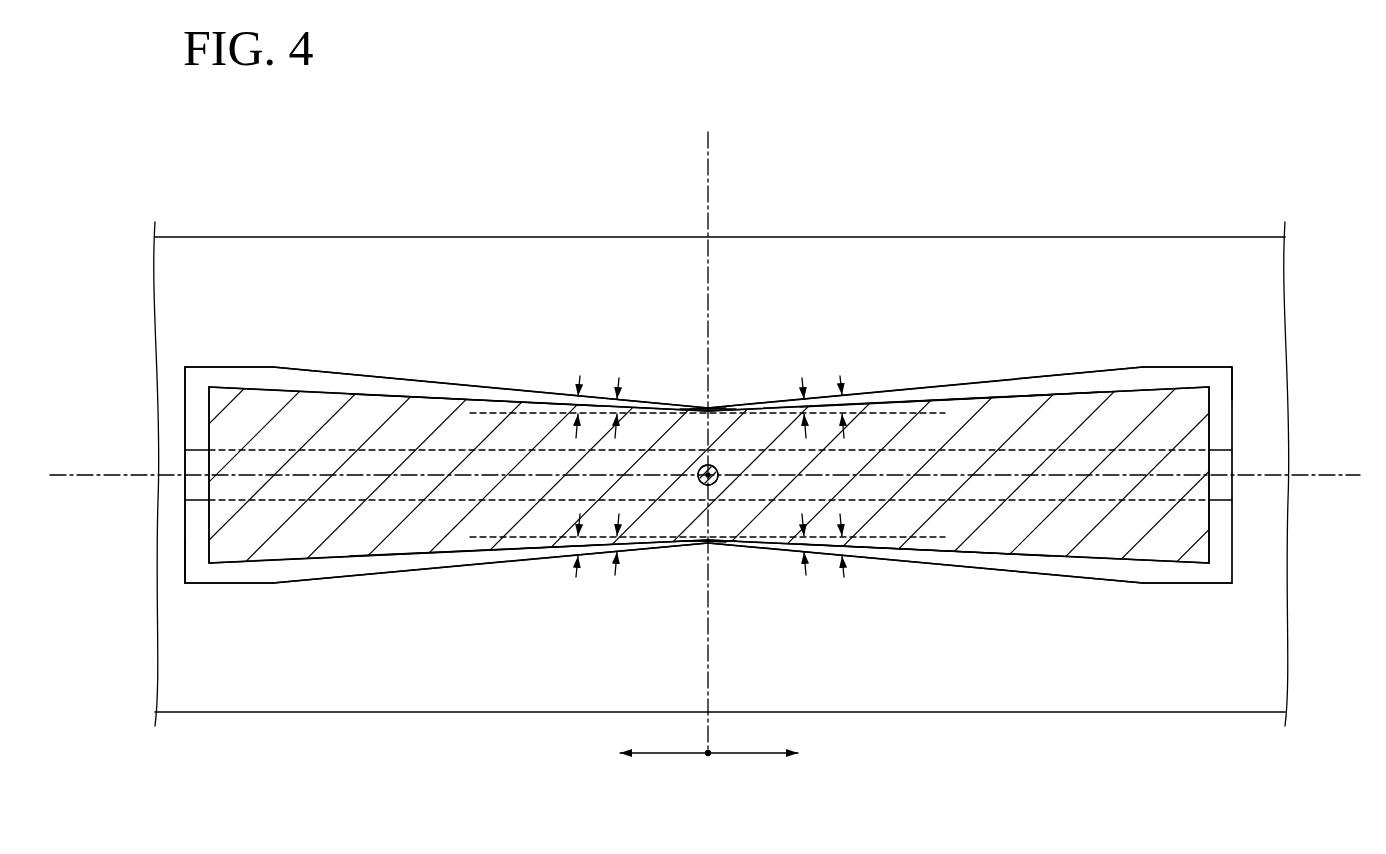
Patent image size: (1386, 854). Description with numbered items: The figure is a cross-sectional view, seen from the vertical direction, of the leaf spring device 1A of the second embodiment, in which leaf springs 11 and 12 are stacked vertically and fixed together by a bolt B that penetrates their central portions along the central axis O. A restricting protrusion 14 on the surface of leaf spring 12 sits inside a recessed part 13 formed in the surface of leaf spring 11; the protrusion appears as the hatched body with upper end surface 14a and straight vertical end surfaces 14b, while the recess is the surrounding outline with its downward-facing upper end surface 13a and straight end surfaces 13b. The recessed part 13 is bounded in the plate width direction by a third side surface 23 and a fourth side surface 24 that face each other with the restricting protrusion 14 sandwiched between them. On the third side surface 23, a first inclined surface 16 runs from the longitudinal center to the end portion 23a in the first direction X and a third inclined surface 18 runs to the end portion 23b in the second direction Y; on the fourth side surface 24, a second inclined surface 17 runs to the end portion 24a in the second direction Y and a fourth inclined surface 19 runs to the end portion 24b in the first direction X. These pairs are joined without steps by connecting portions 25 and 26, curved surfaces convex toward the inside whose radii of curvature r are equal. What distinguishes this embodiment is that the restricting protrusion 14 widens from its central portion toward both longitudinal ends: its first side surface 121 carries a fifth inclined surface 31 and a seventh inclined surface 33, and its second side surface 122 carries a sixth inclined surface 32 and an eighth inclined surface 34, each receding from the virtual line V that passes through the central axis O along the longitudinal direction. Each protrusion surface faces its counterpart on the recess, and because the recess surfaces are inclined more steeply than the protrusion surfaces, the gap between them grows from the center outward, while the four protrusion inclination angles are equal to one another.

The leaf spring device 1A is at (1276, 146).
The leaf spring 11 is at (1158, 237).
The leaf spring 12 is at (1195, 384).
The recessed part 13 is at (1220, 574).
The upper end surface 13a is at (197, 455).
The end surfaces 13b is at (185, 541).
The restricting protrusion 14 is at (709, 388).
The upper end surface 14a is at (960, 466).
The end surfaces 14b is at (209, 468).
The first inclined surface 16 is at (888, 400).
The second inclined surface 17 is at (431, 563).
The third inclined surface 18 is at (500, 402).
The fourth inclined surface 19 is at (1018, 566).
The third side surface 23 is at (392, 383).
The end portion 23a is at (1151, 367).
The end portion 23b is at (210, 367).
The fourth side surface 24 is at (355, 569).
The end portion 24a is at (243, 583).
The end portion 24b is at (1180, 583).
The connecting portion 25 is at (707, 410).
The connecting portion 26 is at (708, 541).
The fifth inclined surface 31 is at (1083, 390).
The sixth inclined surface 32 is at (330, 561).
The seventh inclined surface 33 is at (330, 392).
The eighth inclined surface 34 is at (1082, 558).
The first side surface 121 is at (1018, 395).
The second side surface 122 is at (946, 552).
The central axis O is at (720, 471).
The bolt B is at (719, 477).
The radius of curvature r is at (714, 406).
The virtual line V is at (716, 442).
The first direction X is at (765, 753).
The second direction Y is at (651, 753).